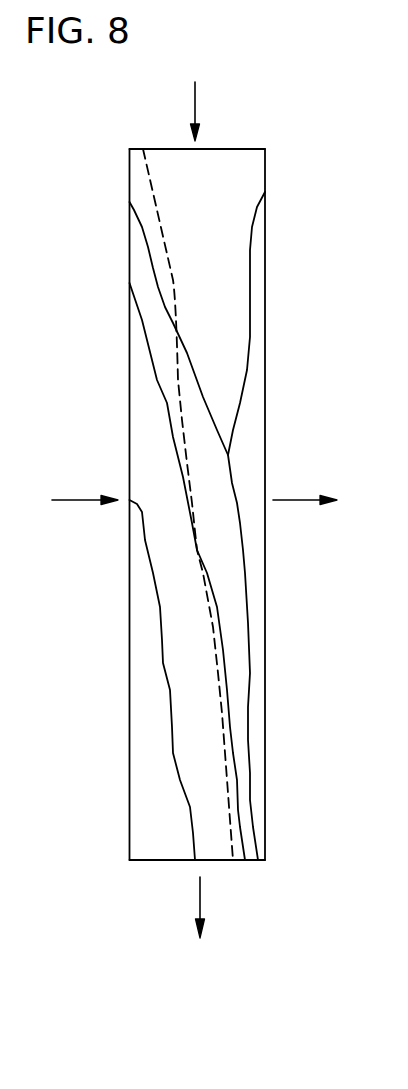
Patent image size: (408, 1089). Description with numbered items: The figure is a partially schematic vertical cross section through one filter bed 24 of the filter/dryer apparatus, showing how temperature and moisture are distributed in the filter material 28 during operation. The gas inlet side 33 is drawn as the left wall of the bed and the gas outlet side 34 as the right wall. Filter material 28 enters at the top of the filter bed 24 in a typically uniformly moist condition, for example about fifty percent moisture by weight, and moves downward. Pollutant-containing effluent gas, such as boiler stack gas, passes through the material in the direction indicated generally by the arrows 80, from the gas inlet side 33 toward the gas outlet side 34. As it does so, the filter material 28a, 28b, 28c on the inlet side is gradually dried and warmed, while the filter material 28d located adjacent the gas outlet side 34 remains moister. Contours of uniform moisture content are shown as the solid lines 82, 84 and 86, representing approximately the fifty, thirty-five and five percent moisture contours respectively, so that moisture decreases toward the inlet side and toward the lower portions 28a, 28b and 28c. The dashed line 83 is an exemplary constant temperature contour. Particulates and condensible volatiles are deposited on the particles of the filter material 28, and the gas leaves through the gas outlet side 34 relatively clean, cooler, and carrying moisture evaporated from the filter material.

The filter bed 24 is at (138, 149).
The filter material 28 is at (221, 161).
The filter material portion on gas inlet side 28a is at (142, 262).
The filter material portion on gas inlet side 28b is at (143, 412).
The filter material portion on gas inlet side 28c is at (143, 738).
The filter material adjacent gas outlet side 28d is at (252, 425).
The gas inlet side 33 is at (129, 545).
The gas outlet side 34 is at (267, 543).
The arrows 80 is at (70, 498).
The moisture contour line 82 is at (187, 353).
The constant temperature contour 83 is at (172, 257).
The moisture contour line 84 is at (147, 348).
The moisture contour line 86 is at (163, 665).